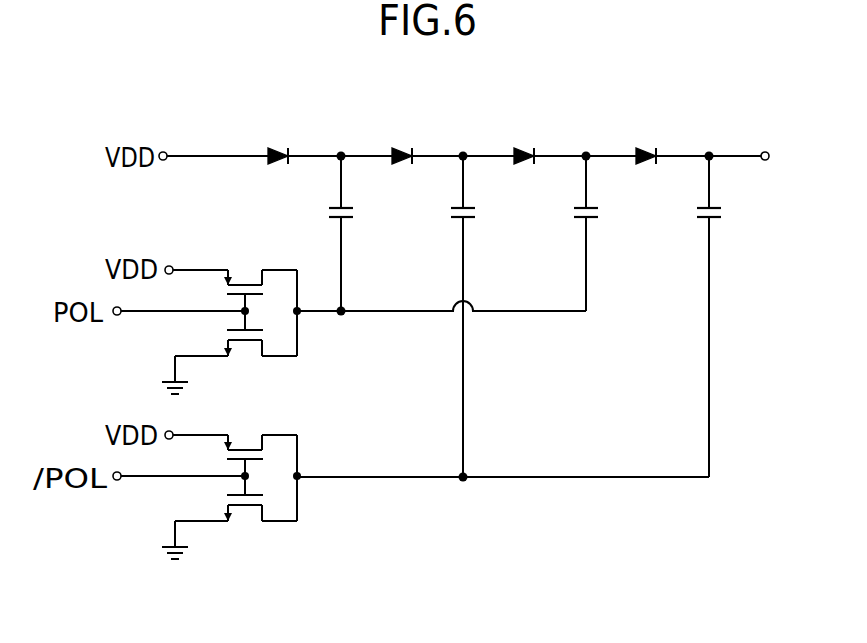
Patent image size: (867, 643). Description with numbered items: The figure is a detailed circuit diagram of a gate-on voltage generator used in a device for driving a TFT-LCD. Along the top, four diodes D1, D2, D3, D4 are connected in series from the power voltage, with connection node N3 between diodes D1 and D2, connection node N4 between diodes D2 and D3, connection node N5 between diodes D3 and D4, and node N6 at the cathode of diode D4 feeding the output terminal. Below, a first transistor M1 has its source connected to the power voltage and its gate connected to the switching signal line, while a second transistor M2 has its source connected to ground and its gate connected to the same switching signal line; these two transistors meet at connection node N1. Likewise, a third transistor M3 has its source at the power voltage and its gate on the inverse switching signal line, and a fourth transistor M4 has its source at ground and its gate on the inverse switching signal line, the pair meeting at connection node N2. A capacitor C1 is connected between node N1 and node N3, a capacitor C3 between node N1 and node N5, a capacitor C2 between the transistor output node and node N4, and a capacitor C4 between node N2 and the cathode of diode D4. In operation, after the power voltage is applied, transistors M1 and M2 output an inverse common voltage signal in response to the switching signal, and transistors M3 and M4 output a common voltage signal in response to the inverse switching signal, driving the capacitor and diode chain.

The diode D1 is at (279, 138).
The diode D2 is at (399, 138).
The diode D3 is at (521, 138).
The diode D4 is at (645, 138).
The capacitor C1 is at (323, 233).
The capacitor C2 is at (443, 316).
The capacitor C3 is at (565, 233).
The capacitor C4 is at (688, 316).
The first transistor M1 is at (207, 315).
The second transistor M2 is at (262, 359).
The third transistor M3 is at (207, 480).
The fourth transistor M4 is at (262, 523).
The connection node N1 is at (441, 298).
The connection node N2 is at (503, 465).
The connection node N3 is at (340, 141).
The connection node N4 is at (461, 141).
The connection node N5 is at (585, 141).
The sixth node N6 is at (709, 141).